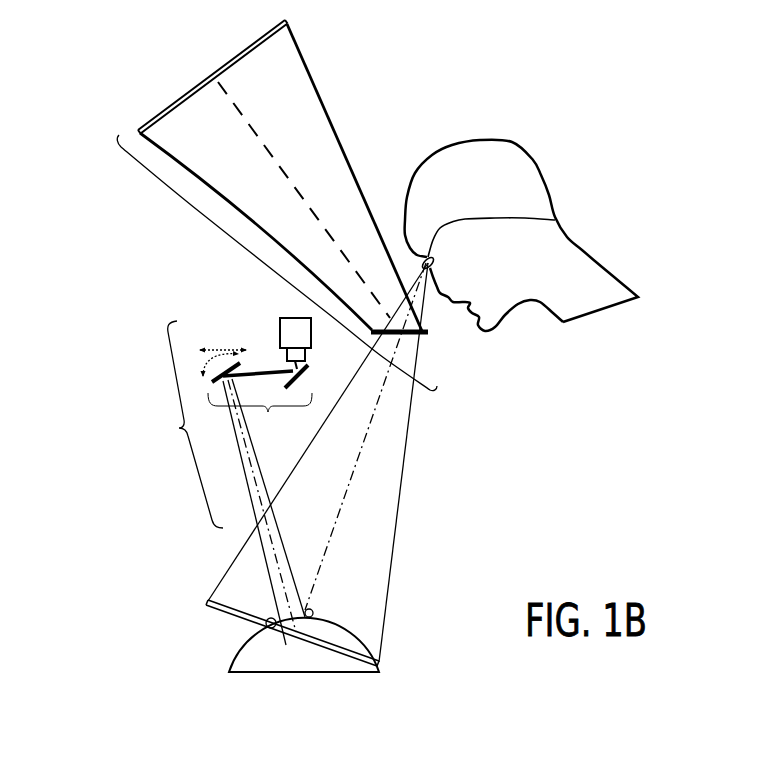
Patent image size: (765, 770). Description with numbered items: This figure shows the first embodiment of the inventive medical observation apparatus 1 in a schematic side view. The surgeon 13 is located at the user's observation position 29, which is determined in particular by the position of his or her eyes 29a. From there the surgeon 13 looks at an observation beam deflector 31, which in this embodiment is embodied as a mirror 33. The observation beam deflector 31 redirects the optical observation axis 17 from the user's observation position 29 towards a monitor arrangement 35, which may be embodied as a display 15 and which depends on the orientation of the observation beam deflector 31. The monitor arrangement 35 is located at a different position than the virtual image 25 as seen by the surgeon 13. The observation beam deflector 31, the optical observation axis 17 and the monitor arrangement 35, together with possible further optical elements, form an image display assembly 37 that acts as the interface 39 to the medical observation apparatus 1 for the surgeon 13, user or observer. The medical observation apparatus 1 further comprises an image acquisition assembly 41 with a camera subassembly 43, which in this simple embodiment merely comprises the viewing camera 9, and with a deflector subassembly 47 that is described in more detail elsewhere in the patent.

The medical observation apparatus 1 is at (106, 203).
The viewing camera 9 is at (288, 330).
The surgeon 13 is at (520, 163).
The display 15 is at (213, 70).
The monitor arrangement 35 is at (233, 63).
The optical observation axis 17 is at (318, 213).
The virtual image 25 is at (222, 615).
The user's observation position 29 is at (534, 217).
The eyes 29a is at (555, 220).
The observation beam deflector 31 is at (441, 375).
The mirror 33 is at (425, 357).
The image display assembly 37 is at (232, 237).
The interface 39 is at (277, 263).
The image acquisition assembly 41 is at (232, 471).
The camera subassembly 43 is at (325, 349).
The deflector subassembly 47 is at (256, 396).